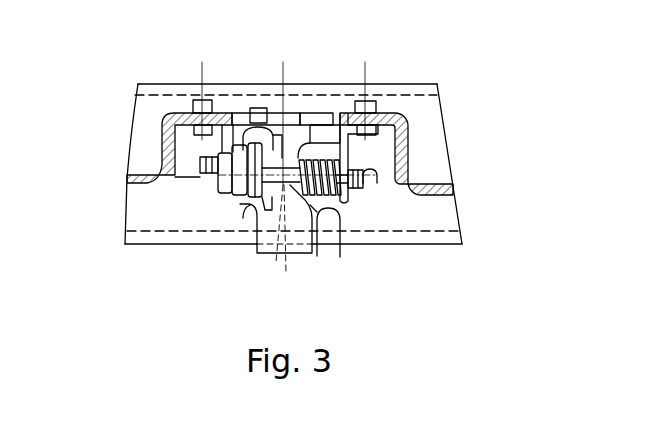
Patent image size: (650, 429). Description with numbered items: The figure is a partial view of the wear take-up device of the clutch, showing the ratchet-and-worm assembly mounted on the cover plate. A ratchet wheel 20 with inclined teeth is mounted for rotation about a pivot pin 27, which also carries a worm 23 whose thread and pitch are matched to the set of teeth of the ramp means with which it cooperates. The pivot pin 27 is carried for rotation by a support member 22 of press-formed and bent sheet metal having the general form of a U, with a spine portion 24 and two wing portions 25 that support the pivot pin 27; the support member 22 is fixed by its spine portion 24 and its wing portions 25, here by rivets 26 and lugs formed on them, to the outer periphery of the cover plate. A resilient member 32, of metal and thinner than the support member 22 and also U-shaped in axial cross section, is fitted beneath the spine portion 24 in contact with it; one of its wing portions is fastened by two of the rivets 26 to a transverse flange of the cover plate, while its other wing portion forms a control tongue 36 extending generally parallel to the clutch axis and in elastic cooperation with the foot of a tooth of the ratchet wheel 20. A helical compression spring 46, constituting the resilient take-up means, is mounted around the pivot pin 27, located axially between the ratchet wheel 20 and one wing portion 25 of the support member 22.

The ratchet wheel 20 is at (314, 254).
The support member 22 is at (360, 148).
The worm 23 is at (256, 106).
The spine portion 24 is at (322, 209).
The wing portions 25 is at (247, 177).
The rivets 26 is at (200, 83).
The pivot pin 27 is at (378, 185).
The resilient member 32 is at (329, 113).
The control tongue 36 is at (243, 218).
The helical compression spring 46 is at (321, 152).